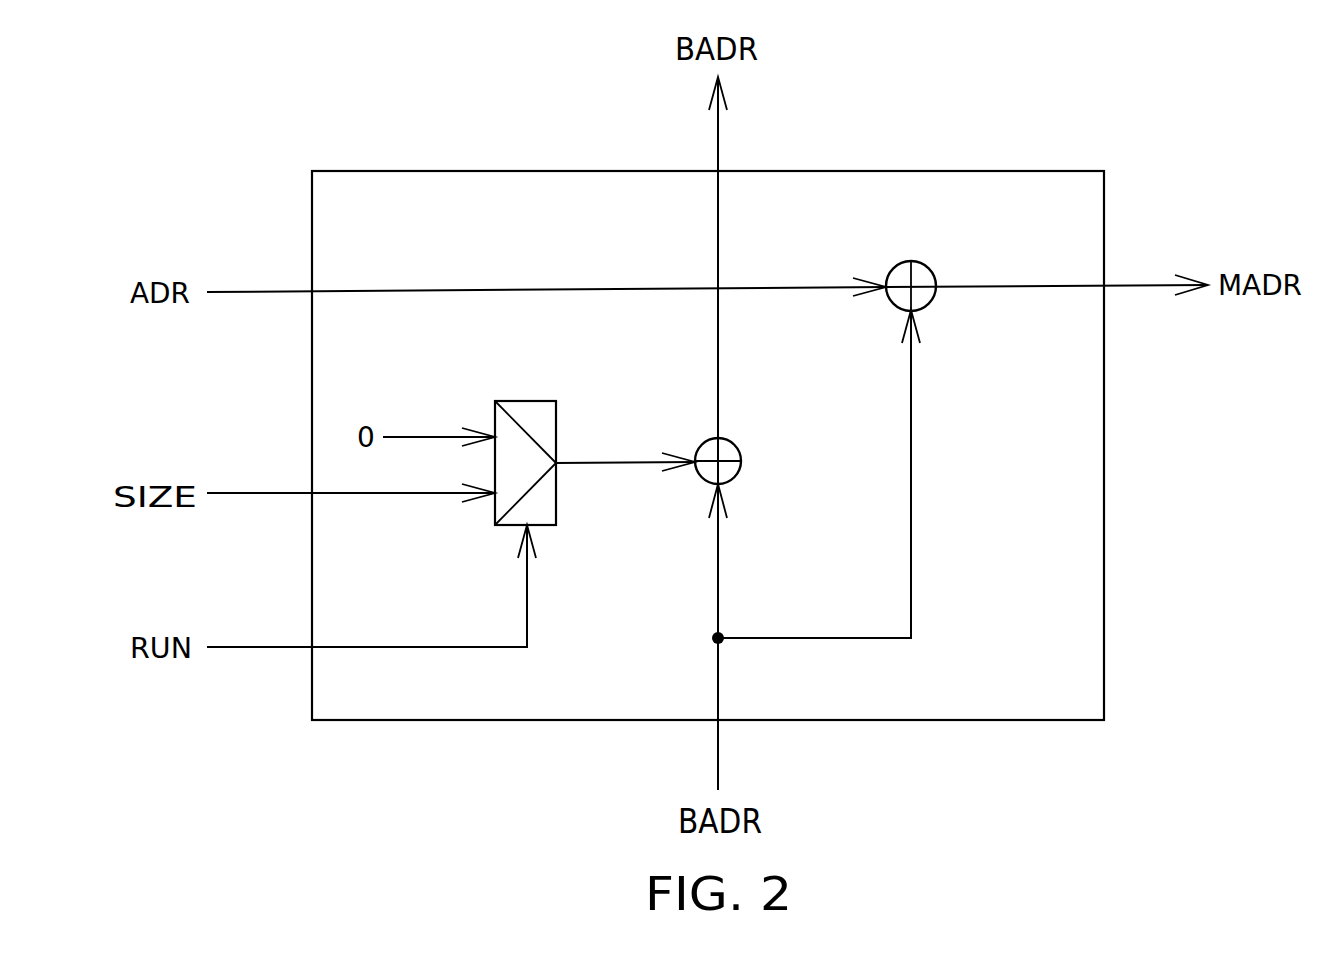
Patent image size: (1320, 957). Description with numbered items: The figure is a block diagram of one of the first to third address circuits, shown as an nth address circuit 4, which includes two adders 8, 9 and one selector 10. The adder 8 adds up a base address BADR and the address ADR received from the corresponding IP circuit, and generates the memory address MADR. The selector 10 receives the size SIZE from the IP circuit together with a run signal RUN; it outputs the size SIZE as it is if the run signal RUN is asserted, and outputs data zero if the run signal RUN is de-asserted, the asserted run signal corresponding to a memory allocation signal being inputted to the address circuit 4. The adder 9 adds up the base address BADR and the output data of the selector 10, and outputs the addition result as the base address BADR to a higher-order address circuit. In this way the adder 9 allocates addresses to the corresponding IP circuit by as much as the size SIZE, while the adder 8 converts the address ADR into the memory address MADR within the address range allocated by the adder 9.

The address circuit 4 is at (897, 721).
The adder 8 is at (911, 261).
The adder 9 is at (738, 449).
The selector 10 is at (540, 400).